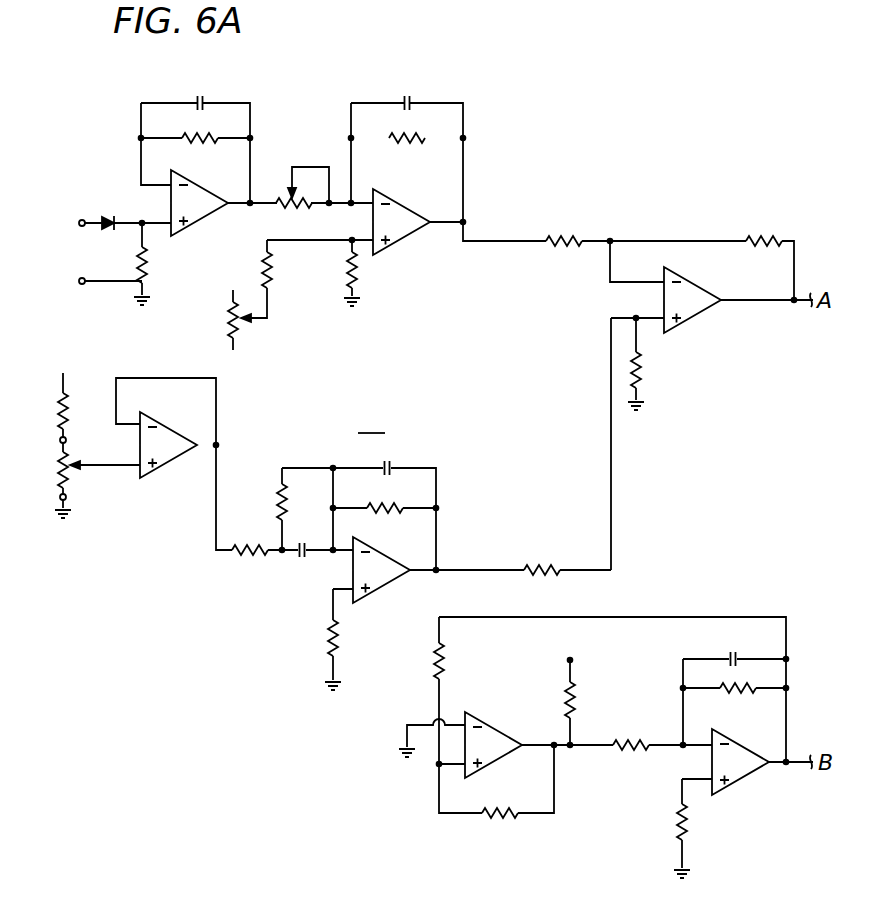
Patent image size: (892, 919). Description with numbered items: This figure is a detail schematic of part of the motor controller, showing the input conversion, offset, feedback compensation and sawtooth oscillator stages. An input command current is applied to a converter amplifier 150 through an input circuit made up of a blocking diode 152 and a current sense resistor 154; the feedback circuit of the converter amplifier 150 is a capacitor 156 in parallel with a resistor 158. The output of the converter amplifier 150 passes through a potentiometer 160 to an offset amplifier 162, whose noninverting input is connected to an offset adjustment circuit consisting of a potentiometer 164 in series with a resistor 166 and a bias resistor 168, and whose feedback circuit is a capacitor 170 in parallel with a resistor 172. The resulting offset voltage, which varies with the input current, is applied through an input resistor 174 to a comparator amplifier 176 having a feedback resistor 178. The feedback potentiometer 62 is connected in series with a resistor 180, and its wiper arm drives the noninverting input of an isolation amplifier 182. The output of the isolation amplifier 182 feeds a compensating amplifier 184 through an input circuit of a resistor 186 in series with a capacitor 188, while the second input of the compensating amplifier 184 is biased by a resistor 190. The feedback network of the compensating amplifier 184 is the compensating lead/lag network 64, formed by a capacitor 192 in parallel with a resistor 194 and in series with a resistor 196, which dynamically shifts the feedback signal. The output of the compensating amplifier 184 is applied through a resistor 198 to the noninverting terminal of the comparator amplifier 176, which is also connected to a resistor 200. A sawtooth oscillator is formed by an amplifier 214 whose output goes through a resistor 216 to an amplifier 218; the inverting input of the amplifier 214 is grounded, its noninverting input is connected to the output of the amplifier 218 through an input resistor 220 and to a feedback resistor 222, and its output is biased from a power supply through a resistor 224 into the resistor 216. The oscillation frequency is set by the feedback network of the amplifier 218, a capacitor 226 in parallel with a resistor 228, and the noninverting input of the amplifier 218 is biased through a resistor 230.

The feedback potentiometer 62 is at (70, 483).
The compensating lead/lag network 64 is at (371, 420).
The converter amplifier 150 is at (207, 222).
The blocking diode 152 is at (108, 216).
The current sense resistor 154 is at (147, 258).
The capacitor 156 is at (204, 100).
The resistor 158 is at (200, 143).
The potentiometer 160 is at (297, 208).
The offset amplifier 162 is at (410, 243).
The potentiometer 164 is at (228, 325).
The resistor 166 is at (272, 283).
The bias resistor 168 is at (358, 283).
The capacitor 170 is at (408, 100).
The resistor 172 is at (410, 143).
The input resistor 174 is at (572, 232).
The comparator amplifier 176 is at (705, 315).
The resistor 178 is at (768, 232).
The resistor 180 is at (70, 405).
The isolation amplifier 182 is at (168, 425).
The compensating amplifier 184 is at (378, 595).
The resistor 186 is at (238, 556).
The capacitor 188 is at (302, 562).
The resistor 190 is at (328, 635).
The capacitor 192 is at (395, 462).
The resistor 194 is at (386, 513).
The resistor 196 is at (278, 496).
The resistor 198 is at (542, 562).
The resistor 200 is at (648, 366).
The amplifier 214 is at (488, 722).
The resistor 216 is at (628, 755).
The amplifier 218 is at (742, 786).
The input resistor 220 is at (432, 662).
The resistor 222 is at (492, 820).
The resistor 224 is at (578, 700).
The capacitor 226 is at (730, 652).
The resistor 228 is at (748, 693).
The resistor 230 is at (675, 826).